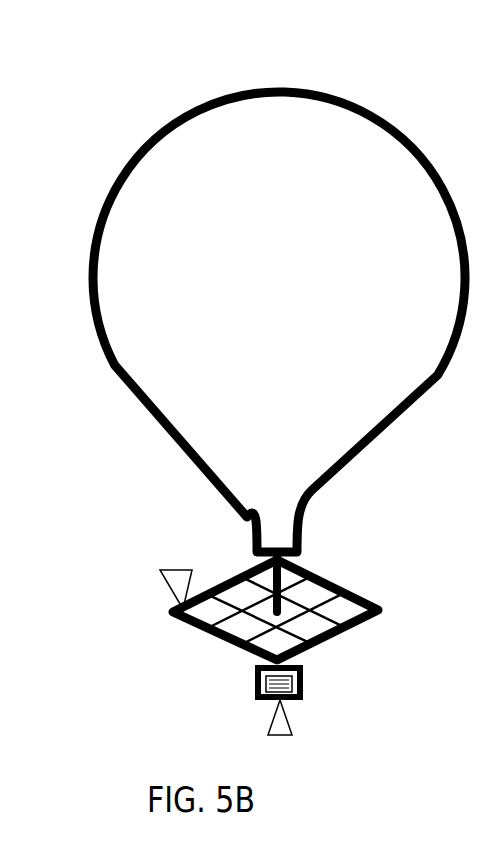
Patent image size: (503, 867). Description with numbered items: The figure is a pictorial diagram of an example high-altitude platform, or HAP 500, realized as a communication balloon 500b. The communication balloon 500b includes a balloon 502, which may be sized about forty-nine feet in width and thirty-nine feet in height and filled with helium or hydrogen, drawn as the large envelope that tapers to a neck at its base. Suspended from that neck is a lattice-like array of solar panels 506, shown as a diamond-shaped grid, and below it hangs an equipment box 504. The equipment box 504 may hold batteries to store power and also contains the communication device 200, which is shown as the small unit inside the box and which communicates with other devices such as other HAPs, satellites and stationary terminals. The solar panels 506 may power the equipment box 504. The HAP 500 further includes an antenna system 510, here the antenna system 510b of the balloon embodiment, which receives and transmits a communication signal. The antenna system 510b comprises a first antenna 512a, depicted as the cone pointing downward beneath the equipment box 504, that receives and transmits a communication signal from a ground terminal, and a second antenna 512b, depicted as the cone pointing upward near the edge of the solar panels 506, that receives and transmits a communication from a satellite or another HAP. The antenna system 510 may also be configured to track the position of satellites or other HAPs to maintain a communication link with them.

The high-altitude platform 500 is at (254, 398).
The communication balloon 500b is at (293, 414).
The balloon 502 is at (425, 393).
The equipment box 504 is at (319, 678).
The solar panels 506 is at (385, 605).
The communication device 200 is at (295, 676).
The antenna system 510 is at (206, 630).
The antenna system 510b is at (220, 630).
The first antenna 512a is at (268, 717).
The second antenna 512b is at (171, 570).